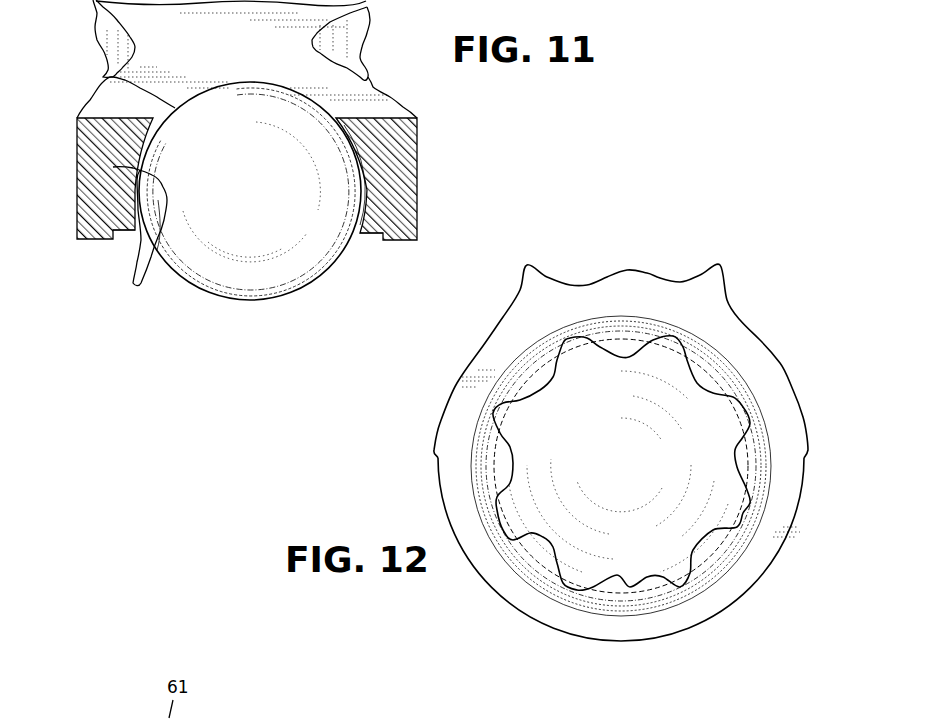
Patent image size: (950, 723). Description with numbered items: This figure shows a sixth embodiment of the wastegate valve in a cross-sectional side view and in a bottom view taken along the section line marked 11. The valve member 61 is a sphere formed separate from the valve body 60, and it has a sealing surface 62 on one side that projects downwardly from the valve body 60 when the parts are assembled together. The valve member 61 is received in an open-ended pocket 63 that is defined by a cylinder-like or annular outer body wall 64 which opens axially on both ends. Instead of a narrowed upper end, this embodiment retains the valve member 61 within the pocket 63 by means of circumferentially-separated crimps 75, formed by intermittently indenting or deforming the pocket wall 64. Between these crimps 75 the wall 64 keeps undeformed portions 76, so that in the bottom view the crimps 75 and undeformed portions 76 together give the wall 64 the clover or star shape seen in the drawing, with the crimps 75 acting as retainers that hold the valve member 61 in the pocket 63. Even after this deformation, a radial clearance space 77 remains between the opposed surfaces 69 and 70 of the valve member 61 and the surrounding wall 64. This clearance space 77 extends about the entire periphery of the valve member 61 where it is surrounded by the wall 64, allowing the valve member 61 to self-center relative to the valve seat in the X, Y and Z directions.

In FIG. 11, the valve body 60 is at (363, 101).
In FIG. 11, the valve member 61 is at (190, 130).
In FIG. 12, the valve member 61 is at (623, 535).
In FIG. 11, the sealing surface 62 is at (257, 272).
In FIG. 12, the sealing surface 62 is at (540, 528).
In FIG. 11, the pocket 63 is at (362, 160).
In FIG. 11, the outer body wall 64 is at (393, 196).
In FIG. 12, the outer body wall 64 is at (792, 435).
In FIG. 11, the opposed surface 69 is at (157, 200).
In FIG. 12, the opposed surface 69 is at (642, 582).
In FIG. 11, the opposed surface 70 is at (113, 167).
In FIG. 12, the opposed surface 70 is at (667, 580).
In FIG. 11, the crimps 75 is at (358, 242).
In FIG. 12, the crimps 75 is at (507, 467).
In FIG. 12, the undeformed portions 76 is at (615, 582).
In FIG. 11, the radial clearance space 77 is at (140, 227).
In FIG. 12, the radial clearance space 77 is at (683, 583).
In FIG. 12, the section line 11- 11 is at (832, 467).